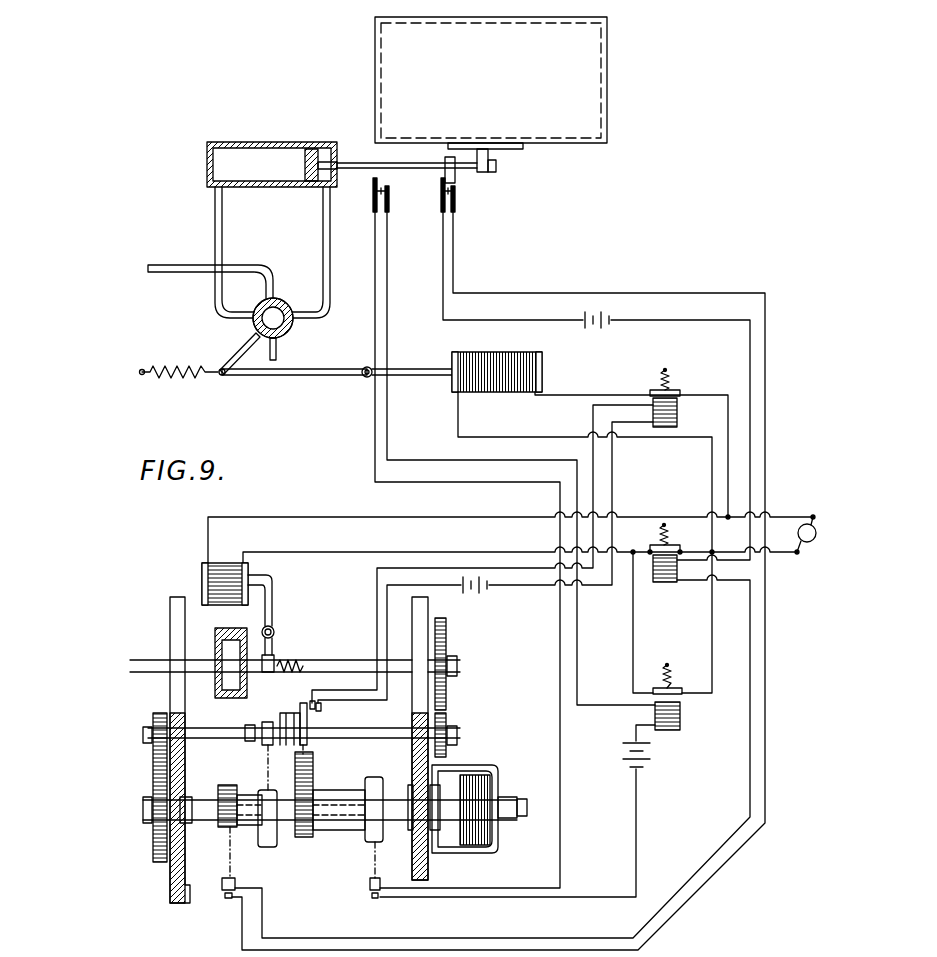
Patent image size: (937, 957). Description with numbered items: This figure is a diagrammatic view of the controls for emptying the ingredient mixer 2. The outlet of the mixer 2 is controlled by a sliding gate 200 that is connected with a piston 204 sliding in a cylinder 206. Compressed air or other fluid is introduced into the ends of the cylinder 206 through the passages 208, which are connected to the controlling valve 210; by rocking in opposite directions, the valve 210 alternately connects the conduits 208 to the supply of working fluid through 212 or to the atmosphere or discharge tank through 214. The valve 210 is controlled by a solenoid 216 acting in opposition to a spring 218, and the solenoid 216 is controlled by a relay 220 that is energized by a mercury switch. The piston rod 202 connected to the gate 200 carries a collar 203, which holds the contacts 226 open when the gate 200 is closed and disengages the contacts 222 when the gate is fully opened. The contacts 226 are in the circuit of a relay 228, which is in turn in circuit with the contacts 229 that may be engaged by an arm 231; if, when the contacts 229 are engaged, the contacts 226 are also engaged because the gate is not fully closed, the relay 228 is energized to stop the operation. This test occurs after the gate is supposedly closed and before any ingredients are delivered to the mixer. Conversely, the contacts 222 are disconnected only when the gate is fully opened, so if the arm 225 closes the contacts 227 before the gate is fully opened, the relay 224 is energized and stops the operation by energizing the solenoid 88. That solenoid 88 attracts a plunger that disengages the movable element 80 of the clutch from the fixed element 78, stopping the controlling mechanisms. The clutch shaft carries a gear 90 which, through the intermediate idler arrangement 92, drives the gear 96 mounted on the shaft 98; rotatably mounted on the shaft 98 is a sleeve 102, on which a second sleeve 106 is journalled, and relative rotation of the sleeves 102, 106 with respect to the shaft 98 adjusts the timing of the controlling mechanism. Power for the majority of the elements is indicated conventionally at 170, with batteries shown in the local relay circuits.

The mixer 2 is at (595, 78).
The sliding gate 200 is at (513, 150).
The piston rod 202 is at (414, 170).
The collar 203 is at (456, 172).
The piston 204 is at (312, 152).
The cylinder 206 is at (255, 142).
The passages 208 is at (323, 210).
The controlling valve 210 is at (292, 328).
The supply connection 212 is at (265, 265).
The discharge connection 214 is at (280, 354).
The solenoid 216 is at (525, 372).
The spring 218 is at (172, 378).
The relay 220 is at (678, 405).
The contacts 222 is at (372, 196).
The relay 224 is at (682, 715).
The arm 225 is at (385, 842).
The contacts 226 is at (458, 194).
The contacts 227 is at (368, 884).
The relay 228 is at (665, 582).
The contacts 229 is at (237, 884).
The arm 231 is at (252, 776).
The source of power 170 is at (818, 517).
The fixed clutch element 78 is at (230, 698).
The movable clutch element 80 is at (253, 635).
The solenoid 88 is at (205, 570).
The gear 90 is at (447, 645).
The intermediate idler arrangement 92 is at (448, 718).
The gear 96 is at (152, 850).
The shaft 98 is at (220, 784).
The sleeve 102 is at (243, 797).
The second sleeve 106 is at (332, 832).